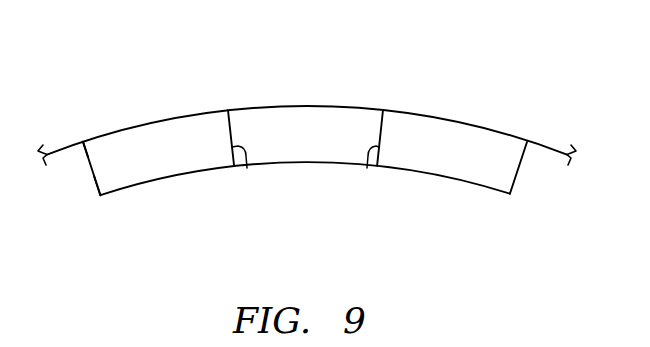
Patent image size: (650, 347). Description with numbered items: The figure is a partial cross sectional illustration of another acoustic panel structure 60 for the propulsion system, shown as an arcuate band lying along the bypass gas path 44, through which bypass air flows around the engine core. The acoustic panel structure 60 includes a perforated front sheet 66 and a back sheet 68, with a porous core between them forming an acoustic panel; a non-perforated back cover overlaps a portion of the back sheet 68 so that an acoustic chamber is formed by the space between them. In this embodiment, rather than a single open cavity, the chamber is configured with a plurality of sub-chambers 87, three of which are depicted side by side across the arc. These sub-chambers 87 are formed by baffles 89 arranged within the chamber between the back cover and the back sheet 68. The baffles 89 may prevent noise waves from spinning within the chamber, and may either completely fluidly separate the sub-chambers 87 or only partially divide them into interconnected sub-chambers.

The acoustic panel structure 60 is at (307, 140).
The bypass gas path 44 is at (320, 58).
The perforated front sheet 66 is at (160, 119).
The back sheet 68 is at (172, 176).
The sub-chambers 87 is at (173, 160).
The baffles 89 is at (247, 168).